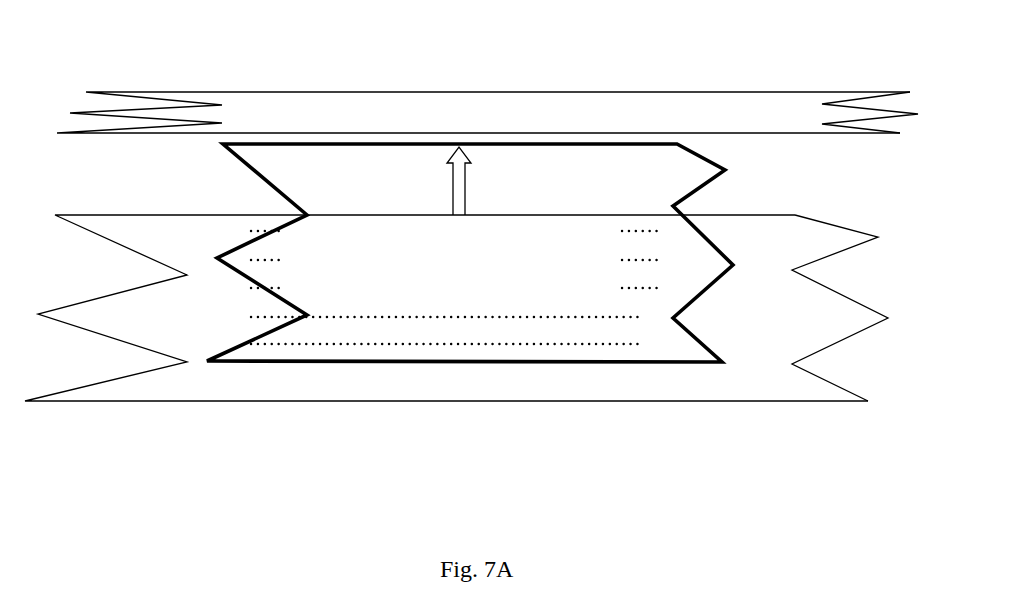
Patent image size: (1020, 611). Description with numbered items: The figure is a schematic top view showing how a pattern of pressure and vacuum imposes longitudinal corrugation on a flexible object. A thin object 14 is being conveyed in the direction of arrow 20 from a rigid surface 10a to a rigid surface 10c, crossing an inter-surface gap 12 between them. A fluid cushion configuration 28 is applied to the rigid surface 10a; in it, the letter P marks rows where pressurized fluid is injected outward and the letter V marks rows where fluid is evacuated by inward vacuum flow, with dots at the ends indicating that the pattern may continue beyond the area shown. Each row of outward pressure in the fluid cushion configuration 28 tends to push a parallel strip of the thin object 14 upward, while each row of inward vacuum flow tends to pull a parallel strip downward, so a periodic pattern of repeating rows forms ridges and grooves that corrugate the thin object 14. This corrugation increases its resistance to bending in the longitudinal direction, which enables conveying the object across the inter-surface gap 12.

The rigid surface 10c is at (232, 92).
The rigid surface 10a is at (203, 402).
The inter-surface gap 12 is at (778, 168).
The thin object 14 is at (250, 236).
The arrow 20 is at (448, 174).
The fluid cushion configuration 28 is at (442, 303).